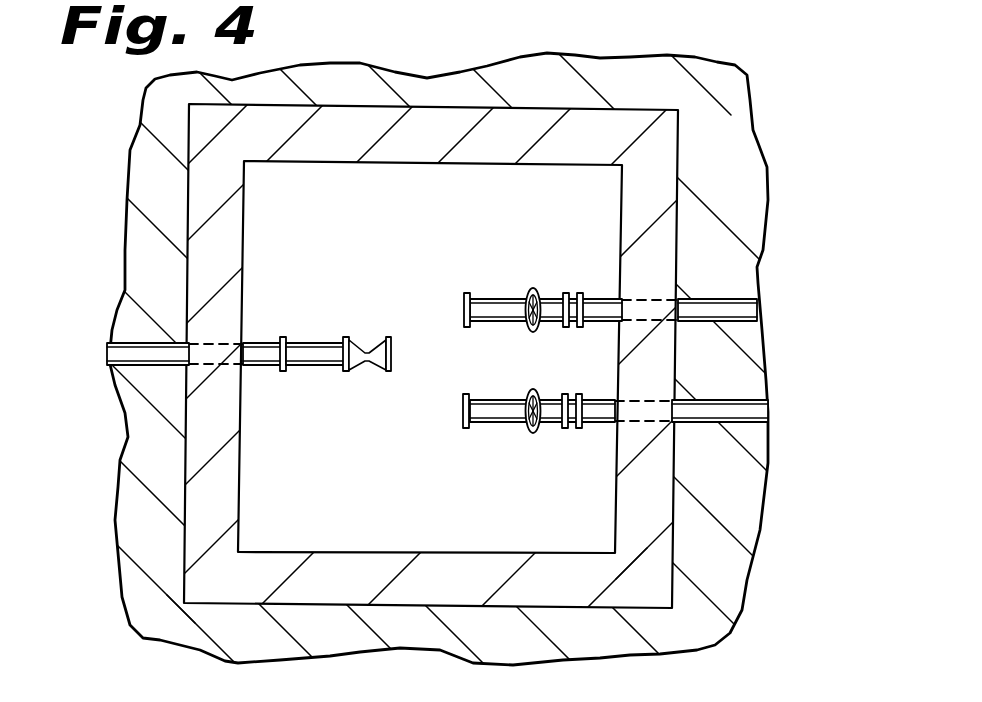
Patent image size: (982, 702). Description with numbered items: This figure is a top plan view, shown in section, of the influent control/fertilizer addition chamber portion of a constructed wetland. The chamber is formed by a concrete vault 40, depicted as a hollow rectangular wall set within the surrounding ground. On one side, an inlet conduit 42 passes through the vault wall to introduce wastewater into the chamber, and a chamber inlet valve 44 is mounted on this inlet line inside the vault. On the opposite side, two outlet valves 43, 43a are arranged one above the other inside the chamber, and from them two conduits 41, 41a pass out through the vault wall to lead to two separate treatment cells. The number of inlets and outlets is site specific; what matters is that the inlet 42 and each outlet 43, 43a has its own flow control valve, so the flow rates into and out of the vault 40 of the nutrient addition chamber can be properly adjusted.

The concrete vault 40 is at (657, 157).
The outlet conduit 41 is at (755, 425).
The outlet conduit 41a is at (718, 312).
The inlet conduit 42 is at (130, 357).
The outlet valve 43 is at (493, 436).
The outlet valve 43a is at (489, 286).
The chamber inlet valve 44 is at (366, 322).